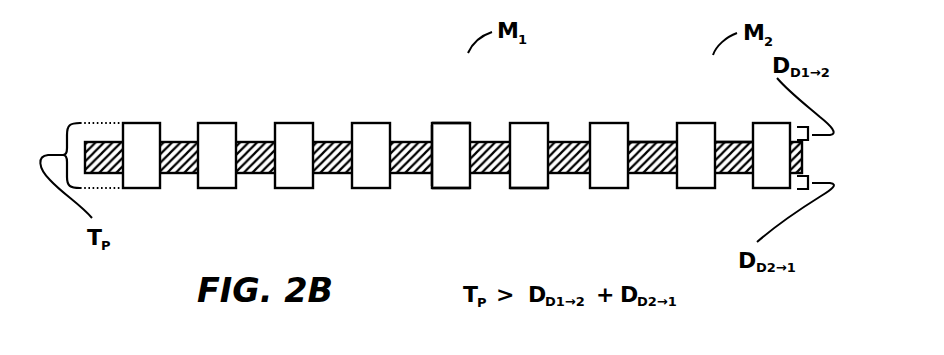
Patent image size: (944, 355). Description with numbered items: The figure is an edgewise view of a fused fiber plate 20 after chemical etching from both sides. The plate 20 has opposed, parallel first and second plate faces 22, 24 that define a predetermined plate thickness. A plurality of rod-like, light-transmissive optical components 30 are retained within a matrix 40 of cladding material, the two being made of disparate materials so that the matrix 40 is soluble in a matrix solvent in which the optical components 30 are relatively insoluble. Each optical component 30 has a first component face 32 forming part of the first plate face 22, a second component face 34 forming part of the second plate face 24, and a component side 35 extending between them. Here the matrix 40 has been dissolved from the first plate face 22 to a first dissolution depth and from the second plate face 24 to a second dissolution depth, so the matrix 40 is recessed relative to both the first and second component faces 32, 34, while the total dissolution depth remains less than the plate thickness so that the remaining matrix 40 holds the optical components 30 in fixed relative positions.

The fused fiber plate 20 is at (135, 98).
The first plate face 22 is at (515, 123).
The second plate face 24 is at (522, 188).
The optical component 30 is at (452, 130).
The first component face 32 is at (443, 123).
The second component face 34 is at (450, 188).
The component side 35 is at (436, 152).
The matrix 40 is at (647, 143).